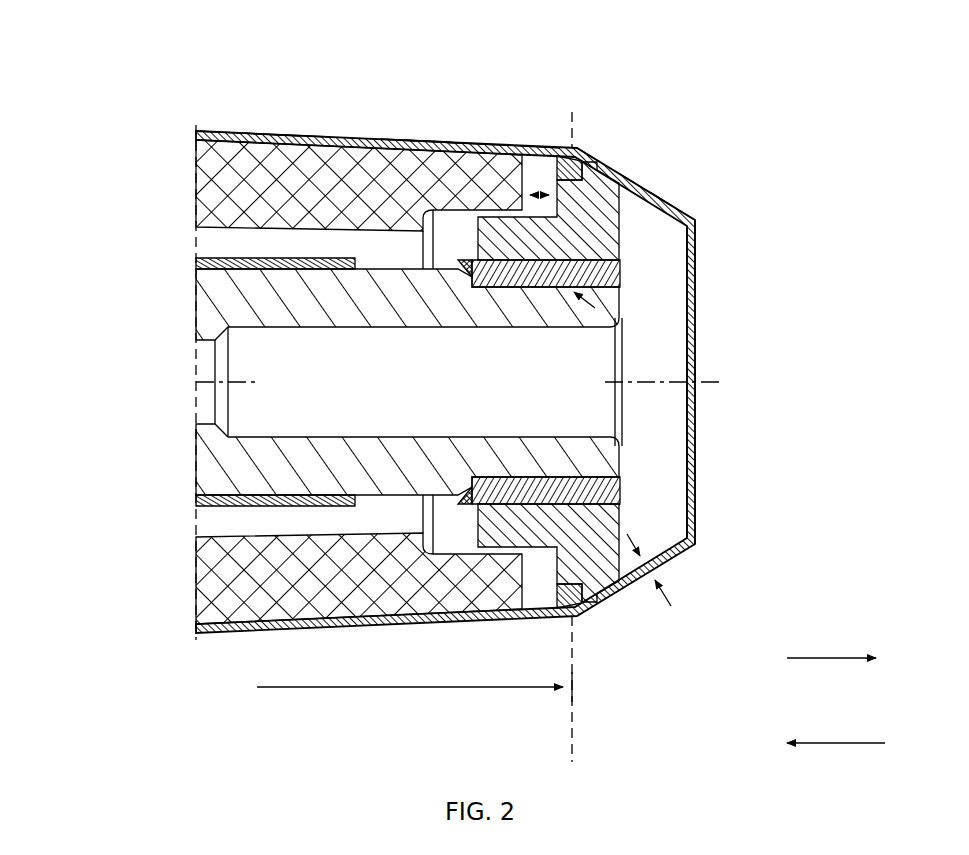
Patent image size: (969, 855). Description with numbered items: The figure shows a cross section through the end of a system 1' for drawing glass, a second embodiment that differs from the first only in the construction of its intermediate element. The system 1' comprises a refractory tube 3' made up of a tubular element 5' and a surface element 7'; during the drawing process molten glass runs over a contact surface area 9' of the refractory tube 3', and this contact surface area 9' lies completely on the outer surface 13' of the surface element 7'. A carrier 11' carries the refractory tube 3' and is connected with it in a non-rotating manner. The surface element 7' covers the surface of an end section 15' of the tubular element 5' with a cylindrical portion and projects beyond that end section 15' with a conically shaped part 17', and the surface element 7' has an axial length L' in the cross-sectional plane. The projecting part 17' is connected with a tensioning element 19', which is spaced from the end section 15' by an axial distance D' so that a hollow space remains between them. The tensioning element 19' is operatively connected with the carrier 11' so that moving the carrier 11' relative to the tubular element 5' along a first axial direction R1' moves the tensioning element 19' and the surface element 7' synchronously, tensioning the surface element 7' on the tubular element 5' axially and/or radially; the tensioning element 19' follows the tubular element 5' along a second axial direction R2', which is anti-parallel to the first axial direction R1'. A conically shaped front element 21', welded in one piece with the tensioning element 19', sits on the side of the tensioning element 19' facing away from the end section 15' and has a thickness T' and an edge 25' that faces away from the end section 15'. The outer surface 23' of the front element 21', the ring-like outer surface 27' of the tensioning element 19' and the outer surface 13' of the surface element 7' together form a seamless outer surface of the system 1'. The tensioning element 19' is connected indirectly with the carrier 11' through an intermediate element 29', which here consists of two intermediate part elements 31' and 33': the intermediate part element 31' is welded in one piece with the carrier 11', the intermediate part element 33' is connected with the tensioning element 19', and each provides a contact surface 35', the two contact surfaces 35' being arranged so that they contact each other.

The system 1' is at (179, 87).
The refractory tube 3' is at (409, 335).
The tubular element 5' is at (321, 382).
The surface element 7' is at (409, 92).
The contact surface area 9' is at (278, 87).
The carrier 11' is at (366, 382).
The outer surface 13' is at (437, 78).
The end section 15' is at (483, 91).
The part 17' is at (540, 98).
The tensioning element 19' is at (615, 348).
The front element 21' is at (676, 158).
The outer surface 23' is at (726, 169).
The edge 25' is at (749, 357).
The outer surface 27' is at (613, 108).
The intermediate element 29' is at (686, 382).
The intermediate part element 31' is at (502, 382).
The intermediate part element 33' is at (643, 382).
The contact surface 35' is at (633, 382).
The distance D' is at (550, 145).
The length L' is at (410, 673).
The thickness T' is at (662, 570).
The direction R1' is at (836, 727).
The direction R2' is at (831, 642).